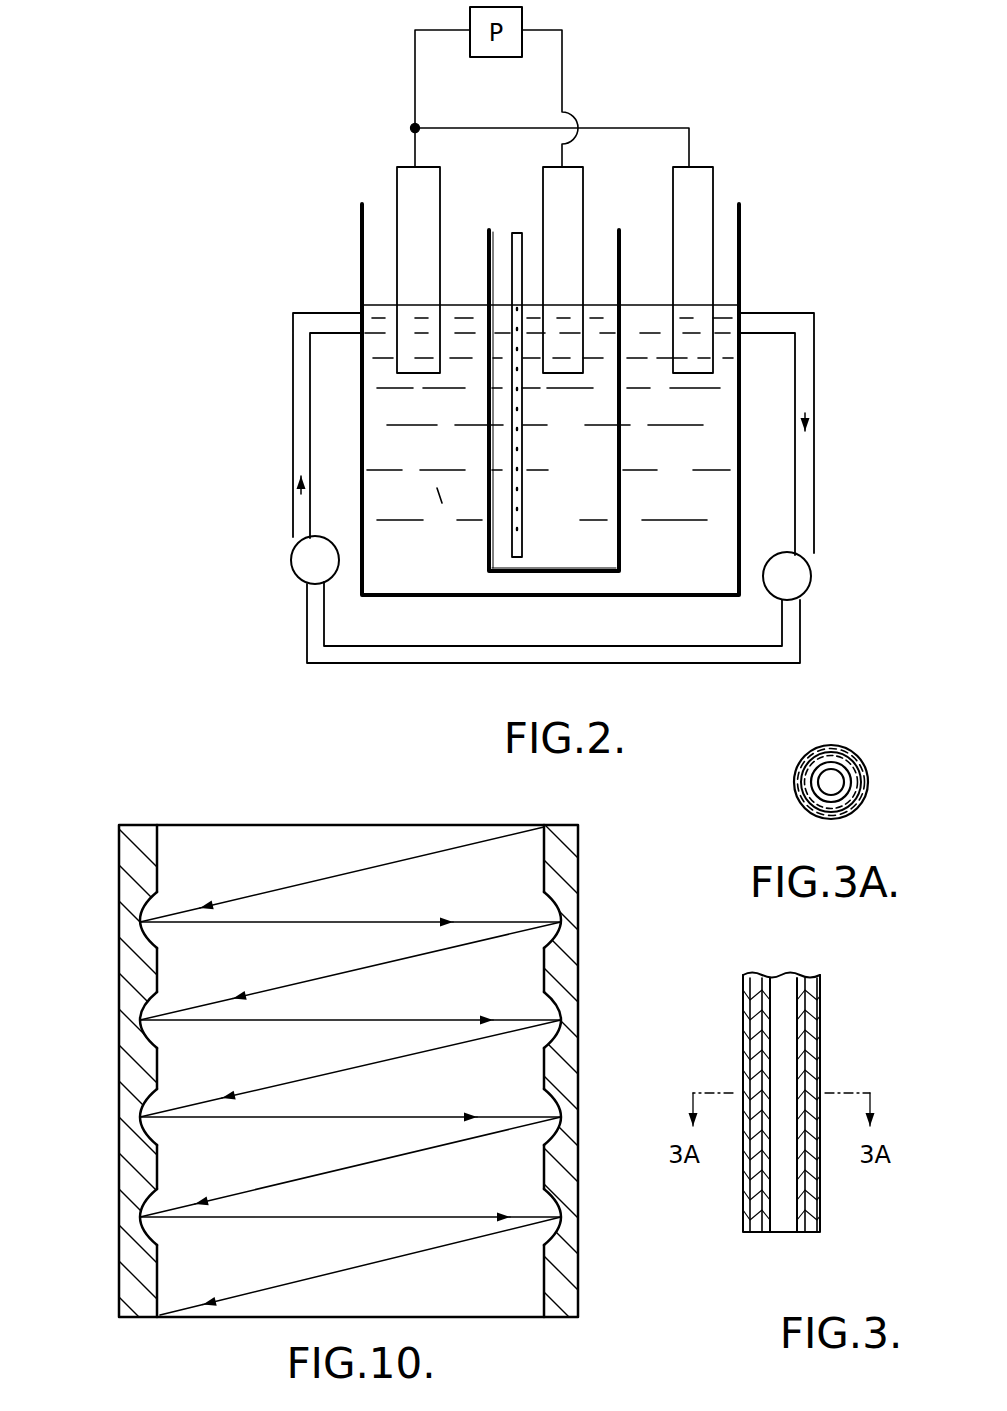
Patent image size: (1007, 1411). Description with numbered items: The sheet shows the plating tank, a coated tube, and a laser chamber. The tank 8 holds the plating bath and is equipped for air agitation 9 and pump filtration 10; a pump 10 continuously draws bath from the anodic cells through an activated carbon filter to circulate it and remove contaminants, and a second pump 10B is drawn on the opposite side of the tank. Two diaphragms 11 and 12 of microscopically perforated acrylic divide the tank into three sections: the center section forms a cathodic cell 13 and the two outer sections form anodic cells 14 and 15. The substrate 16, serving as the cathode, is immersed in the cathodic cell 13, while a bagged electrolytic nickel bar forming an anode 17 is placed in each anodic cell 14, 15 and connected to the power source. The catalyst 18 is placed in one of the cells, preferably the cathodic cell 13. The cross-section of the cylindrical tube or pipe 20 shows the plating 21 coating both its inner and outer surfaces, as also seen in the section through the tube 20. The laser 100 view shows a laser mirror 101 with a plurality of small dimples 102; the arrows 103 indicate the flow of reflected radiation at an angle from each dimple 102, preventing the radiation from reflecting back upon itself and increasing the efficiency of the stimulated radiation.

In FIG. 2, the tank 8 is at (748, 258).
In FIG. 2, the air agitation 9 is at (520, 233).
In FIG. 2, the pump 10 is at (808, 600).
In FIG. 2, the pump 10B is at (303, 592).
In FIG. 2, the diaphragm 11 is at (622, 500).
In FIG. 2, the diaphragm 12 is at (487, 453).
In FIG. 2, the cathodic cell 13 is at (582, 470).
In FIG. 2, the anodic cell 14 is at (406, 577).
In FIG. 2, the anodic cell 15 is at (659, 567).
In FIG. 2, the substrate 16 is at (570, 202).
In FIG. 2, the anode 17 is at (423, 202).
In FIG. 2, the catalyst 18 is at (567, 567).
In FIG. 3A, the tube or pipe 20 is at (845, 760).
In FIG. 3, the tube or pipe 20 is at (755, 1233).
In FIG. 3A, the plating 21 is at (809, 760).
In FIG. 3, the plating 21 is at (742, 1195).
In FIG. 10, the laser 100 is at (206, 819).
In FIG. 10, the laser mirror 101 is at (119, 888).
In FIG. 10, the dimples 102 is at (160, 942).
In FIG. 10, the arrows 103 is at (402, 862).